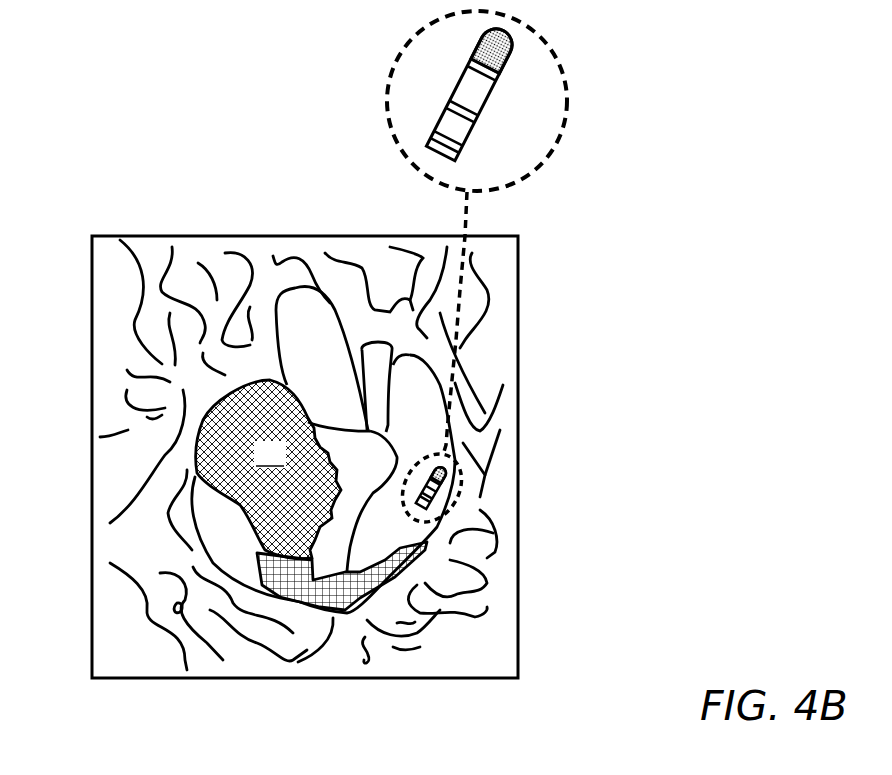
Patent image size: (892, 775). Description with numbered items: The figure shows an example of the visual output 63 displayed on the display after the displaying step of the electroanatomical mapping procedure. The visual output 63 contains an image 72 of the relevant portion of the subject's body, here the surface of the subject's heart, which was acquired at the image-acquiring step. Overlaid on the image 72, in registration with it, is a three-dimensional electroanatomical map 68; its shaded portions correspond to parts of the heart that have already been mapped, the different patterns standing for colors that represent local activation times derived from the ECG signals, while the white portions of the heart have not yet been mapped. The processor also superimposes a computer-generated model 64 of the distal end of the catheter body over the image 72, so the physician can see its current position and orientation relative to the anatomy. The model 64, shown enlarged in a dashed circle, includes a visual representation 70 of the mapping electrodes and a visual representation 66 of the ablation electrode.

The visual output 63 is at (91, 307).
The computer-generated model 64 is at (447, 472).
The visual representation of ablation electrode 66 is at (518, 52).
The three-dimensional electroanatomical map 68 is at (268, 469).
The visual representation of mapping electrodes 70 is at (468, 69).
The image 72 is at (108, 378).